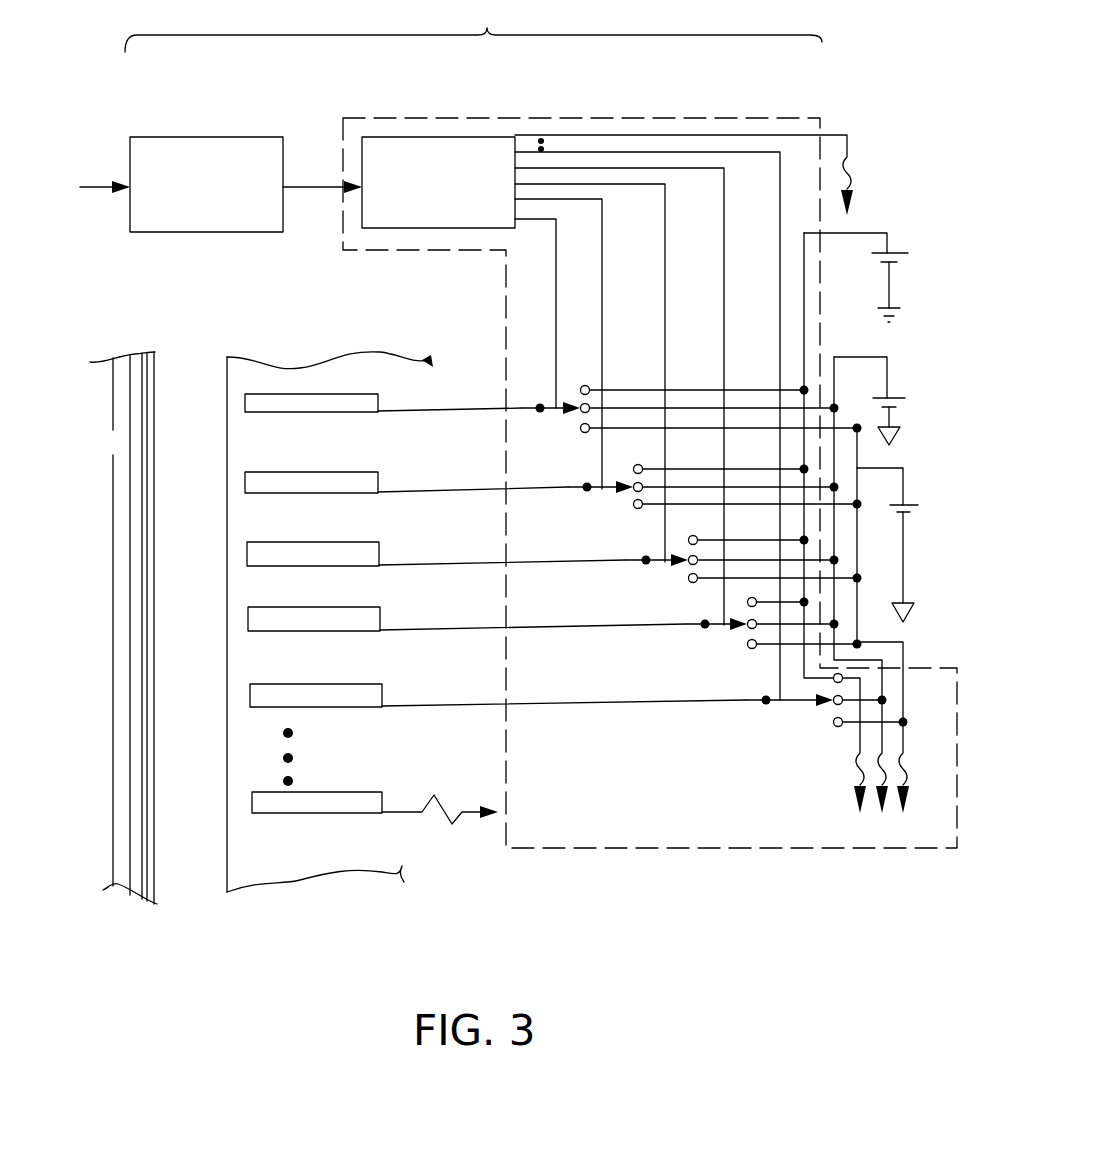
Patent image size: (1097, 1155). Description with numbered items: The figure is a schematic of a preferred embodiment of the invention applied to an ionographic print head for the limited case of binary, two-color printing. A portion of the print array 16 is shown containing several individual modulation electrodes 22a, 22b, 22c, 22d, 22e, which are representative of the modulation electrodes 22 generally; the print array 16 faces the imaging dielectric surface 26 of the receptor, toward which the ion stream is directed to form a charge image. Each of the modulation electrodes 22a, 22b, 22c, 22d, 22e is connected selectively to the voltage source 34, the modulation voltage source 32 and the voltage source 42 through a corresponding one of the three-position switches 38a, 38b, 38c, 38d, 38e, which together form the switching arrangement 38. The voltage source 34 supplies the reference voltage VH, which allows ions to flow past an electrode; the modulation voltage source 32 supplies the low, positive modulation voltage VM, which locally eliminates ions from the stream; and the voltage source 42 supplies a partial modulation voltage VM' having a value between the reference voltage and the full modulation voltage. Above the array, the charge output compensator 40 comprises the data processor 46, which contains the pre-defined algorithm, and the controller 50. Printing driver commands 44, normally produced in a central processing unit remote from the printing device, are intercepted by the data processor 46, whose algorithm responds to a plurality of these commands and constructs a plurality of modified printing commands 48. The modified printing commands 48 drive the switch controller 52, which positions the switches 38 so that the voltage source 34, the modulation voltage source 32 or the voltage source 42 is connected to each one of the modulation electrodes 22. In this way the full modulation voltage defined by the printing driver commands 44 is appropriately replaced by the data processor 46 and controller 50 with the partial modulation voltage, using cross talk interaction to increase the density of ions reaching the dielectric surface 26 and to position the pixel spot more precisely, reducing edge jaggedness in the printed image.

The charge output compensator 40 is at (541, 425).
The printing driver commands 44 is at (105, 159).
The data processor 46 is at (204, 137).
The modified printing commands 48 is at (312, 187).
The controller 50 is at (463, 118).
The switch controller 52 is at (516, 130).
The voltage source 34 is at (895, 250).
The modulation voltage source 32 is at (881, 395).
The voltage source 42 is at (906, 503).
The dielectric surface 26 is at (118, 384).
The print array 16 is at (305, 382).
The modulation electrodes 22 is at (337, 846).
The modulation electrode 22a is at (246, 396).
The modulation electrode 22b is at (246, 472).
The modulation electrode 22c is at (247, 545).
The modulation electrode 22d is at (248, 610).
The modulation electrode 22e is at (250, 686).
The switching arrangement 38 is at (576, 577).
The three-position switch 38a is at (548, 412).
The three-position switch 38b is at (597, 492).
The three-position switch 38c is at (656, 562).
The three-position switch 38d is at (718, 627).
The three-position switch 38e is at (785, 707).